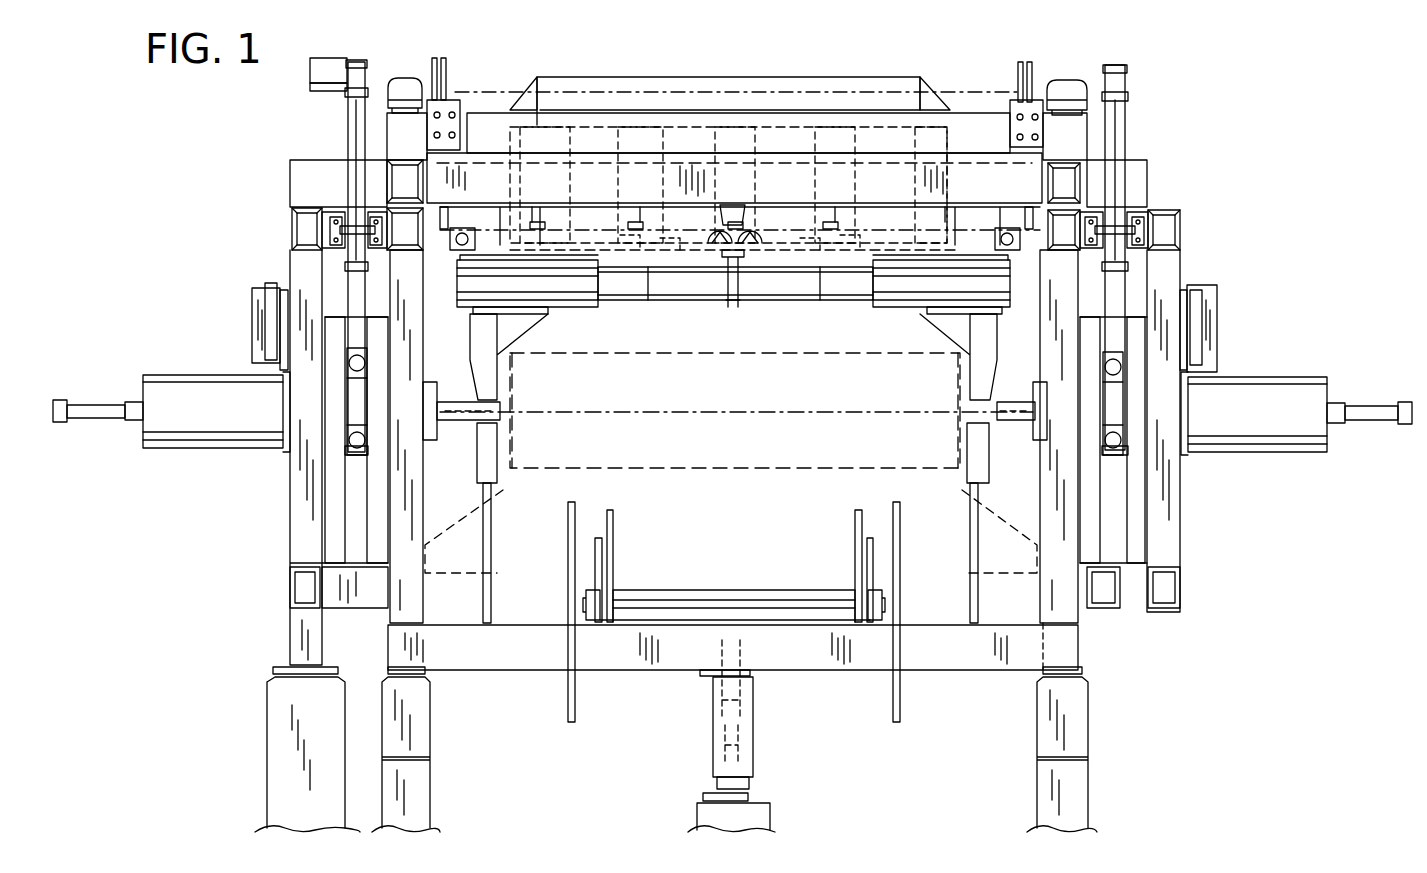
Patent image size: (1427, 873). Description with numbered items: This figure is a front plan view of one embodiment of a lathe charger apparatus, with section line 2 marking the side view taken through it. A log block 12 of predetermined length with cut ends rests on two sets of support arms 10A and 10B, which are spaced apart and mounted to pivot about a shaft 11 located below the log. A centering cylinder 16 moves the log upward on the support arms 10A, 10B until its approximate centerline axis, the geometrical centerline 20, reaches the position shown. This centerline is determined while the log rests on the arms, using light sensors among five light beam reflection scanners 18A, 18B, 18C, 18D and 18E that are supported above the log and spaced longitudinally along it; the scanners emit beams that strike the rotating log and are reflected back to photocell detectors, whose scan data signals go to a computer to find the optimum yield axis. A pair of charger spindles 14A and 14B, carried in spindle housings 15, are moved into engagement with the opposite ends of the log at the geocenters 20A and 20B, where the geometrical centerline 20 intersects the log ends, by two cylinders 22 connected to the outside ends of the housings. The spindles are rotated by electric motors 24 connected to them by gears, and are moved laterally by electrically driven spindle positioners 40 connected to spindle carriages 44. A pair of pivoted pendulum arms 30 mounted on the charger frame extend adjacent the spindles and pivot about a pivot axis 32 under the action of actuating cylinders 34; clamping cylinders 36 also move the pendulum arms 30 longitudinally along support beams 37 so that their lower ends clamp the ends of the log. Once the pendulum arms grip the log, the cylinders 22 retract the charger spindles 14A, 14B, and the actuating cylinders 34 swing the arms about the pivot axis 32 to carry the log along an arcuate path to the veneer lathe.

The section line 2 is at (935, 62).
The support arm 10A is at (612, 548).
The support arm 10B is at (855, 548).
The shaft 11 is at (752, 596).
The log block 12 is at (678, 352).
The charger spindle 14A is at (475, 396).
The charger spindle 14B is at (992, 396).
The spindle housing 15 is at (180, 376).
The centering cylinder 16 is at (755, 718).
The light beam reflection scanner 18A is at (520, 160).
The light beam reflection scanner 18B is at (615, 160).
The light beam reflection scanner 18C is at (745, 160).
The light beam reflection scanner 18D is at (845, 160).
The light beam reflection scanner 18E is at (925, 185).
The geometrical centerline 20 is at (667, 412).
The geocenter 20A is at (513, 418).
The geocenter 20B is at (958, 418).
The cylinder 22 is at (100, 402).
The electric motor 24 is at (253, 320).
The pendulum arm 30 is at (480, 338).
The pivot axis 32 is at (402, 80).
The actuating cylinder 34 is at (445, 212).
The clamping cylinder 36 is at (630, 236).
The support beam 37 is at (622, 285).
The spindle positioner 40 is at (352, 143).
The spindle carriage 44 is at (355, 456).